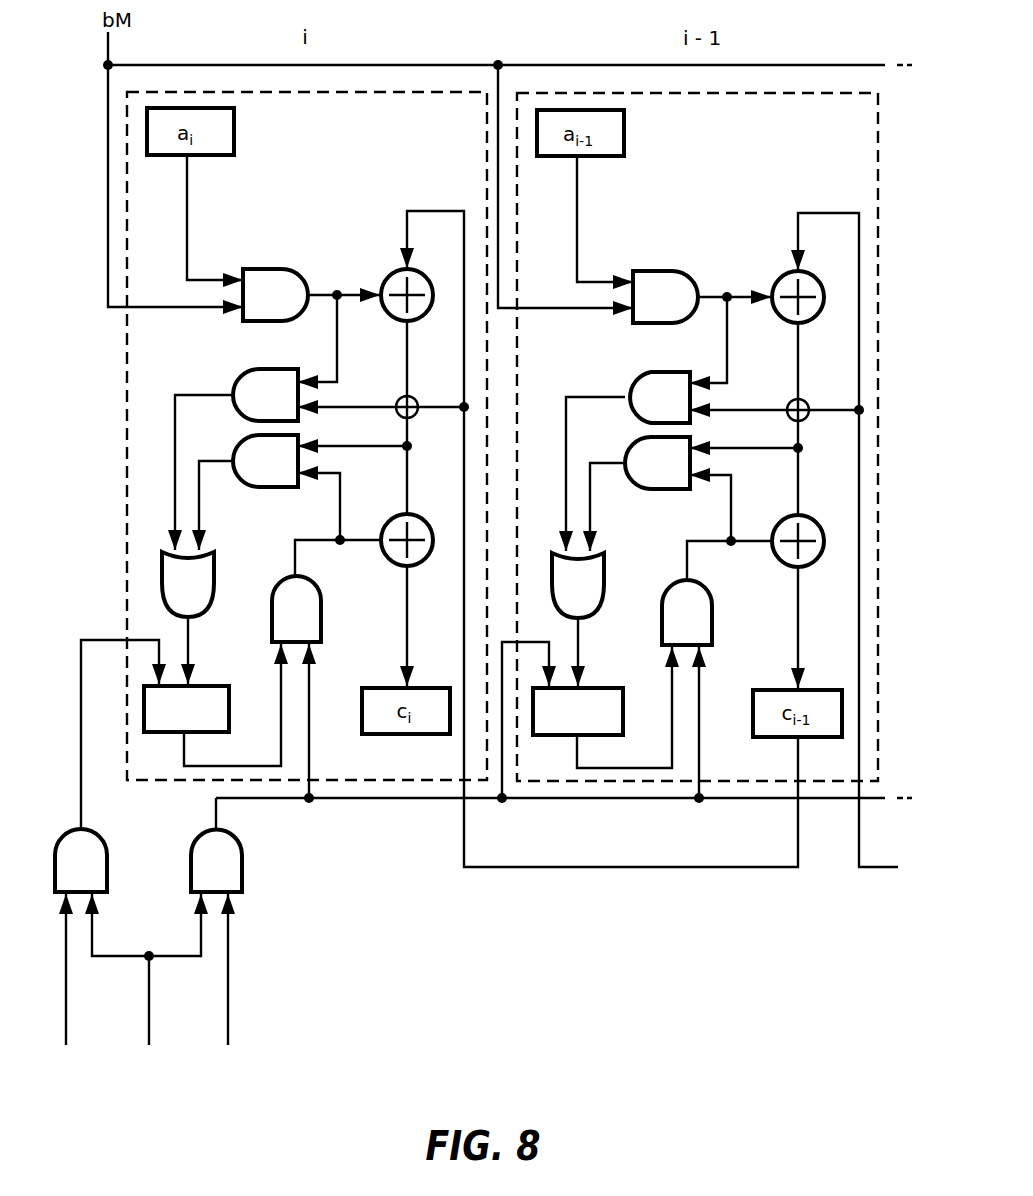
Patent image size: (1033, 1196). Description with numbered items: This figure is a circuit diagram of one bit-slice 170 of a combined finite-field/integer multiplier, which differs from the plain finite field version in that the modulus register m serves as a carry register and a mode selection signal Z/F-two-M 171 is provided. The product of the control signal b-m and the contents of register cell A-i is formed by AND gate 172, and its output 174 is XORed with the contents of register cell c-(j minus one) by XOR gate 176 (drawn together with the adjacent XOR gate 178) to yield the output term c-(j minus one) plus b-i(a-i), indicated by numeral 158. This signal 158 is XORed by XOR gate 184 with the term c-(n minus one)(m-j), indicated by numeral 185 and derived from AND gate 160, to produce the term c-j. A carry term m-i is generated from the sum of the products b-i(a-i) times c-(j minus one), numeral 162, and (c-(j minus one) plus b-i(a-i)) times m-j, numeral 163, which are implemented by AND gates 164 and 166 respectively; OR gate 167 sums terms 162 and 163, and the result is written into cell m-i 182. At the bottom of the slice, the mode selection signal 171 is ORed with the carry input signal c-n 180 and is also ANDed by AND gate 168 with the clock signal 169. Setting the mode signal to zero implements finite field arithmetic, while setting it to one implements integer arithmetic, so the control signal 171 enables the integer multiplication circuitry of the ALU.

The output term c_{j-1} + b_i(a_i) 158 is at (409, 346).
The AND gate 160 is at (322, 607).
The product term b_i(a_i)·c_{j-1} 162 is at (175, 443).
The product term (c_{j-1} + b_i(a_i))·(m_j) 163 is at (199, 492).
The AND gate 164 is at (270, 369).
The AND gate 166 is at (280, 487).
The OR gate 167 is at (162, 575).
The AND gate 168 is at (97, 828).
The clock signal 169 is at (68, 967).
The bit-slice 170 is at (368, 92).
The mode selection signal Z/F_2^M 171 is at (151, 972).
The AND gate 172 is at (277, 269).
The output of AND gate 174 is at (345, 288).
The XOR gate 176 is at (400, 270).
The XOR gate 178 is at (422, 211).
The carry input signal c_n 180 is at (231, 967).
The cell m_i 182 is at (201, 684).
The XOR gate 184 is at (396, 516).
The term c_{n-1}(m_j) 185 is at (408, 635).